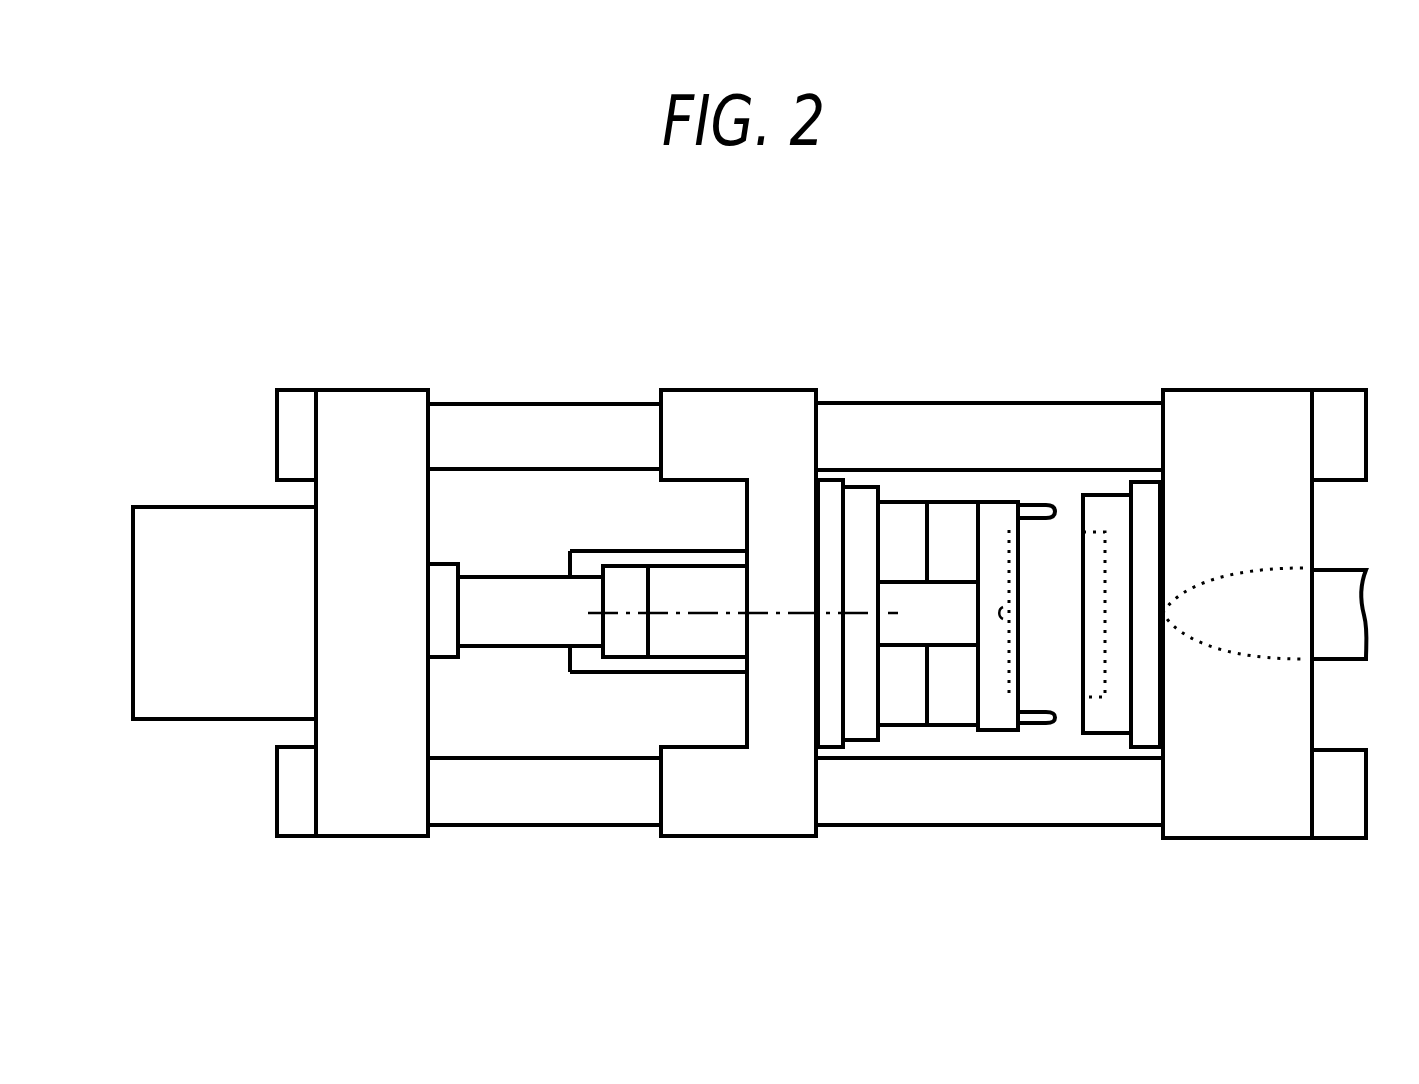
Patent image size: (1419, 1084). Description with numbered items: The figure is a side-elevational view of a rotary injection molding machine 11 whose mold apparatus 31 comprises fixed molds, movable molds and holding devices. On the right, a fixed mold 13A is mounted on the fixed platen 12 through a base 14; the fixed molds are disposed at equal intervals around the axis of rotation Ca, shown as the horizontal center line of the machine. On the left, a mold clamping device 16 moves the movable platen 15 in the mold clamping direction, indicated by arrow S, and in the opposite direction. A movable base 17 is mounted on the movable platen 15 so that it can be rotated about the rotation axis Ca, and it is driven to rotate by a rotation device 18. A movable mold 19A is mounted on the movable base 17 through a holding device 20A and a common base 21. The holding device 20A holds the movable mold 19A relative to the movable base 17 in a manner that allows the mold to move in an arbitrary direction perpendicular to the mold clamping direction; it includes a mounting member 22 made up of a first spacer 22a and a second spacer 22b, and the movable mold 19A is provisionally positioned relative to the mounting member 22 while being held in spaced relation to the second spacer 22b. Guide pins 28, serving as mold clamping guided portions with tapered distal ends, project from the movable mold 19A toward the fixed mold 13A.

The rotary injection molding machine 11 is at (1043, 308).
The fixed platen 12 is at (1237, 390).
The fixed mold 13A is at (1103, 494).
The base 14 is at (1150, 748).
The movable platen 15 is at (750, 838).
The mold clamping device 16 is at (197, 507).
The movable base 17 is at (830, 760).
The rotation device 18 is at (587, 551).
The movable mold 19A is at (1000, 732).
The holding device 20A is at (928, 731).
The common base 21 is at (860, 742).
The mounting member 22 is at (928, 500).
The first spacer 22a is at (903, 500).
The second spacer 22b is at (951, 500).
The guide pin 28 is at (1035, 522).
The mold apparatus 31 is at (1043, 500).
The axis of rotation Ca is at (725, 613).
The mold clamping direction S is at (728, 343).